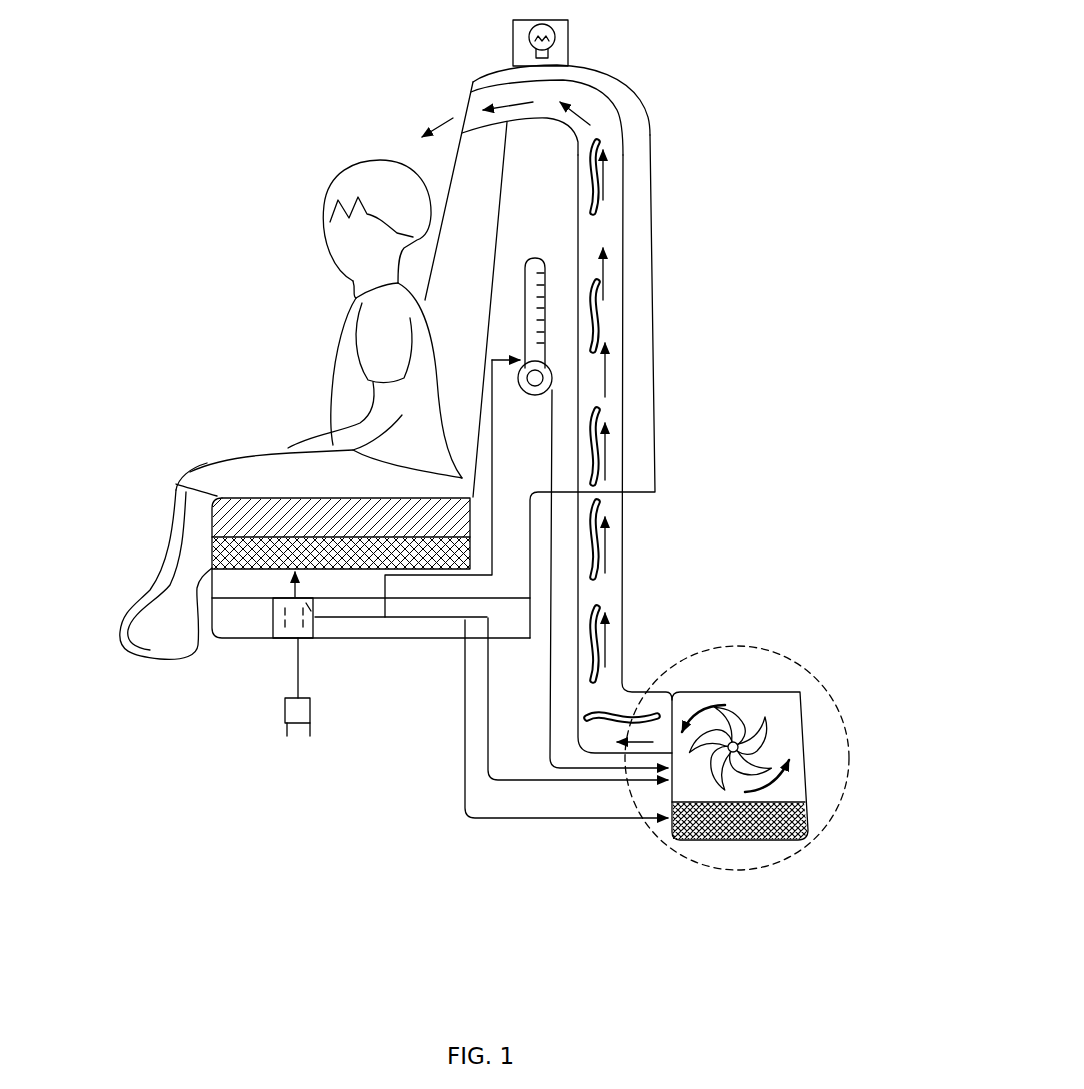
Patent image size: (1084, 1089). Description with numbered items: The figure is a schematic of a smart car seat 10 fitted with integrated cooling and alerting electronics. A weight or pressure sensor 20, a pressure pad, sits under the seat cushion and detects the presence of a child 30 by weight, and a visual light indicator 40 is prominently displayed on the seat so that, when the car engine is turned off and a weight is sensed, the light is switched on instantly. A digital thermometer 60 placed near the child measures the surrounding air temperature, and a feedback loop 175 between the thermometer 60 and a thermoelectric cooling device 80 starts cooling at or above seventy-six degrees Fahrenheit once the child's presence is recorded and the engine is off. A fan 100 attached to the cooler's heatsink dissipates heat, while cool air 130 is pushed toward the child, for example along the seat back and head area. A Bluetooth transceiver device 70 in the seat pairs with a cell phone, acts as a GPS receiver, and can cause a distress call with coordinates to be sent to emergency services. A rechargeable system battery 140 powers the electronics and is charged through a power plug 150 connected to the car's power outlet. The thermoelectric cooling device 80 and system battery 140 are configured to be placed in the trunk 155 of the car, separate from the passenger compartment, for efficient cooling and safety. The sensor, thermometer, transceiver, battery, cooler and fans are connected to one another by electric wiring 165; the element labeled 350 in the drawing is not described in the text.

The smart car seat 10 is at (140, 163).
The weight or pressure sensor 20 is at (205, 500).
The child 30 is at (325, 362).
The visual light indicator 40 is at (567, 47).
The digital thermometer 60 is at (548, 258).
The Bluetooth transceiver device 70 is at (262, 565).
The thermoelectric cooling device 80 is at (808, 773).
The fan 100 is at (773, 730).
The cool air 130 is at (607, 147).
The system battery 140 is at (810, 817).
The power plug 150 is at (285, 718).
The trunk 155 is at (777, 860).
The electric wiring 165 is at (440, 580).
The feedback loop 175 is at (557, 430).
The seat back wall 350 is at (626, 313).